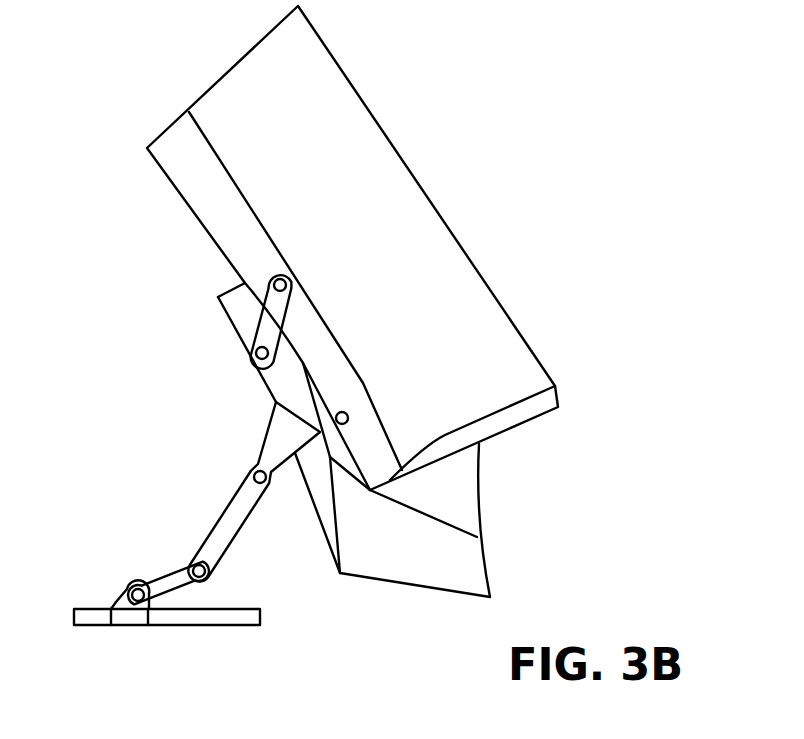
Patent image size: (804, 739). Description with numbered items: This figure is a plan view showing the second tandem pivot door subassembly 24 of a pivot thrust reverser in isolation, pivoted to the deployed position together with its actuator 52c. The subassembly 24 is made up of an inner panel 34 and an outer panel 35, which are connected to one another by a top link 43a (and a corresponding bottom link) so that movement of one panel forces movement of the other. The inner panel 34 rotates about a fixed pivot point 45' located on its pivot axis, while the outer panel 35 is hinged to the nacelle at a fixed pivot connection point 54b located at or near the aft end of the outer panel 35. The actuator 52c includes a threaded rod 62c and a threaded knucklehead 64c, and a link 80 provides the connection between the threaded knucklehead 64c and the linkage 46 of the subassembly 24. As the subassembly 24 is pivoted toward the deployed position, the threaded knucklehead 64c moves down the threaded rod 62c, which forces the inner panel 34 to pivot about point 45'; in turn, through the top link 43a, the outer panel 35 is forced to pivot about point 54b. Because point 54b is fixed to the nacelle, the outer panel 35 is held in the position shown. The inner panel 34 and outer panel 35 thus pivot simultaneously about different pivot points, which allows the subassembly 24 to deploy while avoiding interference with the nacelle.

The second tandem pivot door subassembly 24 is at (532, 168).
The outer panel 35 is at (495, 363).
The inner panel 34 is at (450, 510).
The top link 43a is at (267, 328).
The pivot 45' is at (219, 460).
The linkage 46 is at (232, 523).
The link 80 is at (177, 582).
The fixed pivot connection point 54b is at (347, 425).
The threaded knucklehead 64c is at (127, 618).
The threaded rod 62c is at (207, 618).
The actuator 52c is at (100, 663).